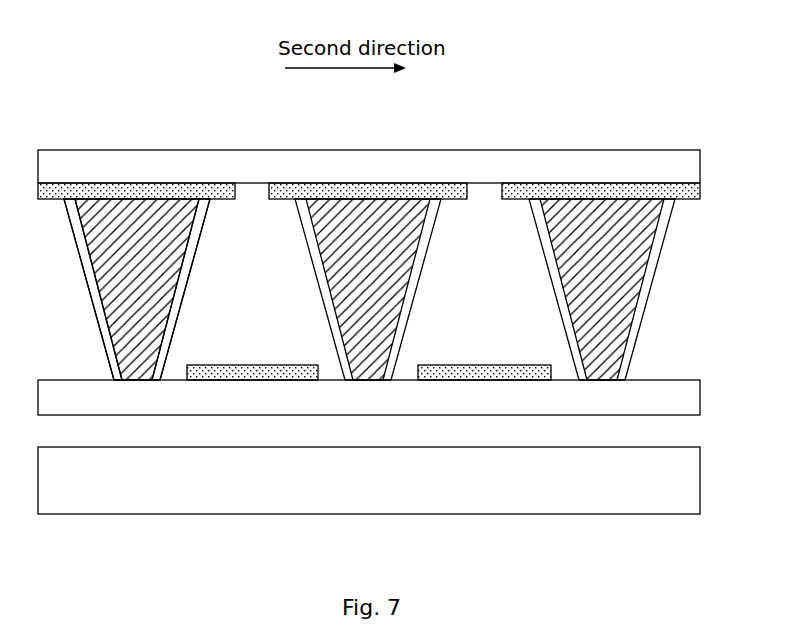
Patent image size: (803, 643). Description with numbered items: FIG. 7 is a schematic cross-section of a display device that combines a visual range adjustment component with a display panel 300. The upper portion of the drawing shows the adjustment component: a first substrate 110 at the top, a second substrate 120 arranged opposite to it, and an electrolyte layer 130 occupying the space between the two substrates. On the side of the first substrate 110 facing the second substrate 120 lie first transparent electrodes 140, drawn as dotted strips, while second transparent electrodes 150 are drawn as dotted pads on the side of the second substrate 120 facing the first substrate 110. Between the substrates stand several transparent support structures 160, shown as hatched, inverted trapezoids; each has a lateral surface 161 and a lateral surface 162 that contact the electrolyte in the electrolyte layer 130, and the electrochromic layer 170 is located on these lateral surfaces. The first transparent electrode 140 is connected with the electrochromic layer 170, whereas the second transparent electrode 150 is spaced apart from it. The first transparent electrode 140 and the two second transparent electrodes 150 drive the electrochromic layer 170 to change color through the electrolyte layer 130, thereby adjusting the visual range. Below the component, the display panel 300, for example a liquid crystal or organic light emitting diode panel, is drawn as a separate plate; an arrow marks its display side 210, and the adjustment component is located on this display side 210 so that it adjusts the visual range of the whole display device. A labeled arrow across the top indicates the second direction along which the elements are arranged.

The first substrate 110 is at (369, 139).
The second substrate 120 is at (369, 481).
The electrolyte layer 130 is at (277, 173).
The first transparent electrode 140 is at (369, 147).
The second transparent electrode 150 is at (387, 474).
The transparent support structure 160 is at (369, 391).
The lateral surface 161 is at (140, 391).
The lateral surface 162 is at (226, 391).
The electrochromic layer 170 is at (369, 238).
The display side 210 is at (596, 262).
The display panel 300 is at (369, 515).